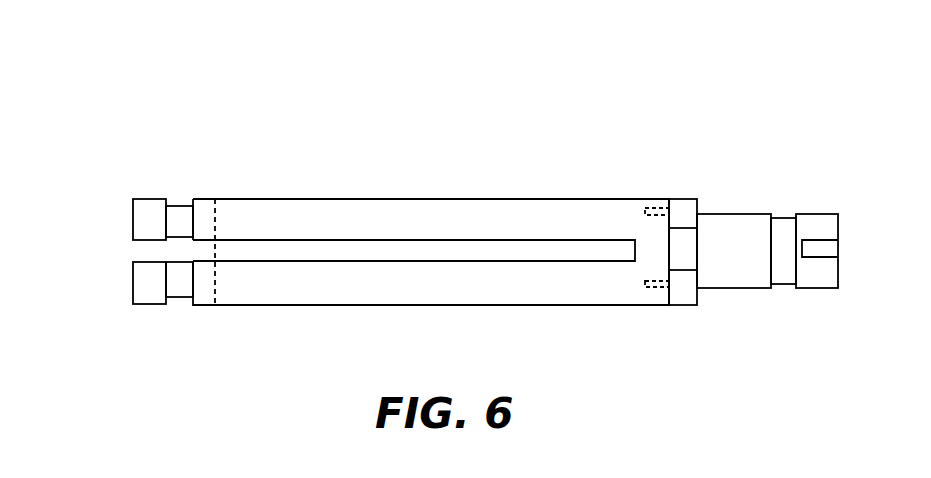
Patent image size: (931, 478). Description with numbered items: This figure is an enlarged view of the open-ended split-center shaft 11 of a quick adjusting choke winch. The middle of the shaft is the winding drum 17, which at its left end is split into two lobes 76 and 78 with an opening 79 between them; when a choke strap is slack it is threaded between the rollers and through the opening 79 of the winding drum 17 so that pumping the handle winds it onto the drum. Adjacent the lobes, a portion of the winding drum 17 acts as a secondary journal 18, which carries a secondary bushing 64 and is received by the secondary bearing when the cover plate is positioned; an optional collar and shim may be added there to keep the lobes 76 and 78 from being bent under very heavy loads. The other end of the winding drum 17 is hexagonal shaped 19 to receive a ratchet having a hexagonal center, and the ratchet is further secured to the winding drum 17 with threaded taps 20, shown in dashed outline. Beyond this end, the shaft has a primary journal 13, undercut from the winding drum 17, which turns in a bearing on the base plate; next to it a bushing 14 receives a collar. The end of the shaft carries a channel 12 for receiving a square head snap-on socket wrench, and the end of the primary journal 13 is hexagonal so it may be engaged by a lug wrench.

The open-ended split-center shaft 11 is at (588, 97).
The channel 12 is at (828, 250).
The primary journal 13 is at (723, 277).
The bushing 14 is at (780, 273).
The winding drum 17 is at (448, 233).
The secondary journal 18 is at (200, 207).
The hexagonal shaped end 19 is at (688, 202).
The threaded taps 20 is at (648, 212).
The secondary bushing 64 is at (177, 215).
The lobe 76 is at (151, 210).
The lobe 78 is at (143, 288).
The opening 79 is at (158, 254).